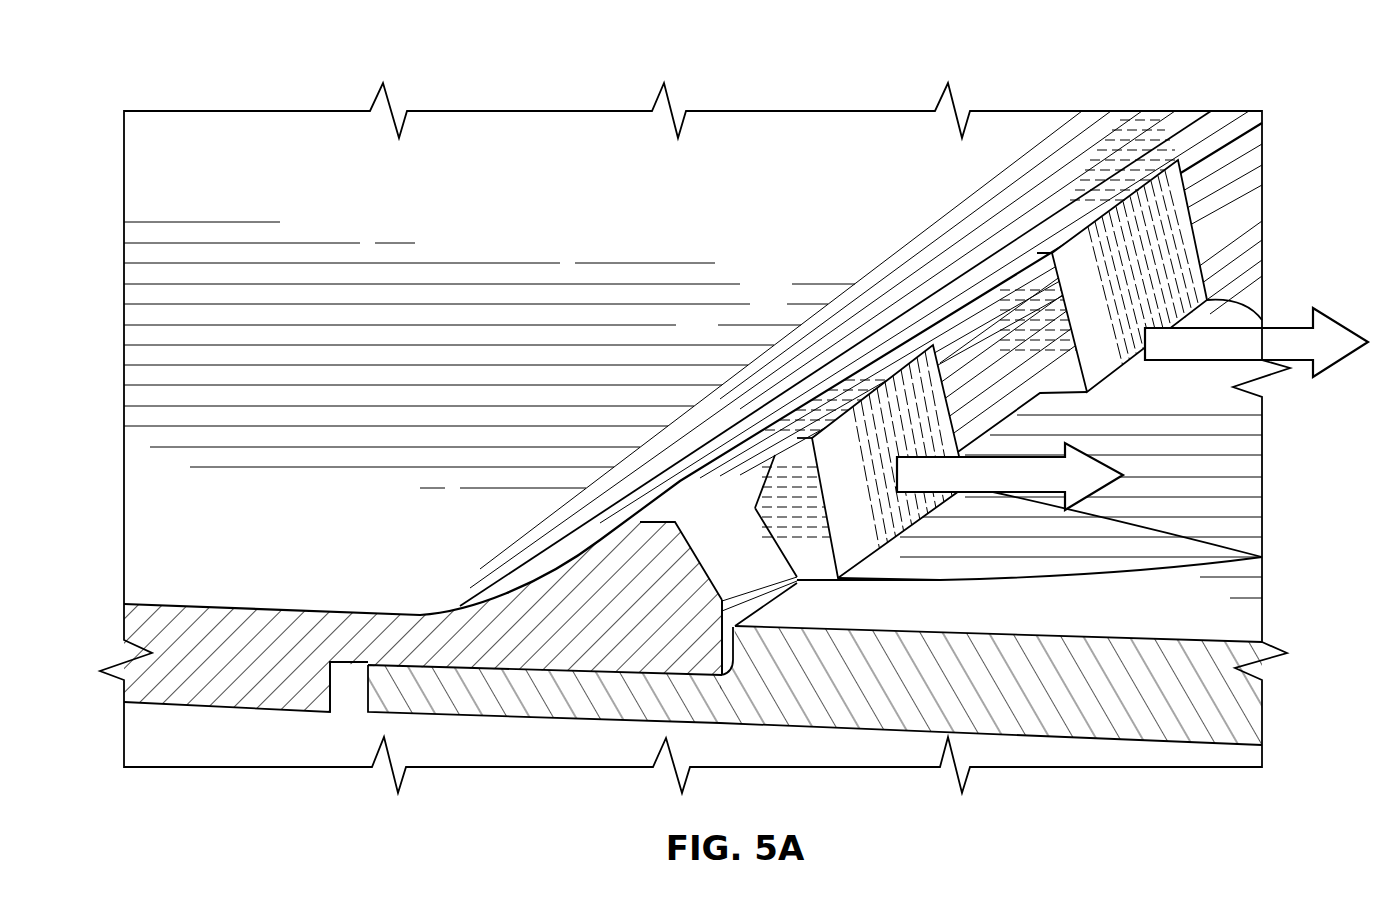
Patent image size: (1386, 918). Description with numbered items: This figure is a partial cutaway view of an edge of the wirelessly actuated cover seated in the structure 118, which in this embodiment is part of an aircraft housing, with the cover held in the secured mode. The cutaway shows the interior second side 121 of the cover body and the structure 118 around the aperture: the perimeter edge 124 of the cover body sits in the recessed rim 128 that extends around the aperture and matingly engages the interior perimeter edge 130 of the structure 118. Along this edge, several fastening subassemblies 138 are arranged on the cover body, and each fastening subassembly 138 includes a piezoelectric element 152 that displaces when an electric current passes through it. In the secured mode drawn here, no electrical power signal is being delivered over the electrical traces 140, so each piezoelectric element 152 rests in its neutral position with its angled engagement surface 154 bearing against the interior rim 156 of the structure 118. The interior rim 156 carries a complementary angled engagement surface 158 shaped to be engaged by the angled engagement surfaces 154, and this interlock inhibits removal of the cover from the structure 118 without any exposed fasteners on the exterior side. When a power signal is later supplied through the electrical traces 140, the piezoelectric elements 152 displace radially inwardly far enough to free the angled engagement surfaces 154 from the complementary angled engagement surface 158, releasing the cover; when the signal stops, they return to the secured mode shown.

The structure 118 is at (368, 203).
The second side 121 is at (800, 613).
The perimeter edge 124 is at (358, 705).
The recessed rim 128 is at (538, 658).
The interior perimeter edge 130 is at (722, 648).
The fastening subassembly 138 is at (898, 390).
The electrical traces 140 is at (1227, 563).
The piezoelectric (PZE) element 152 is at (1047, 290).
The angled engagement surface 154 is at (1008, 345).
The interior rim 156 is at (613, 617).
The complementary angled engagement surface 158 is at (690, 560).